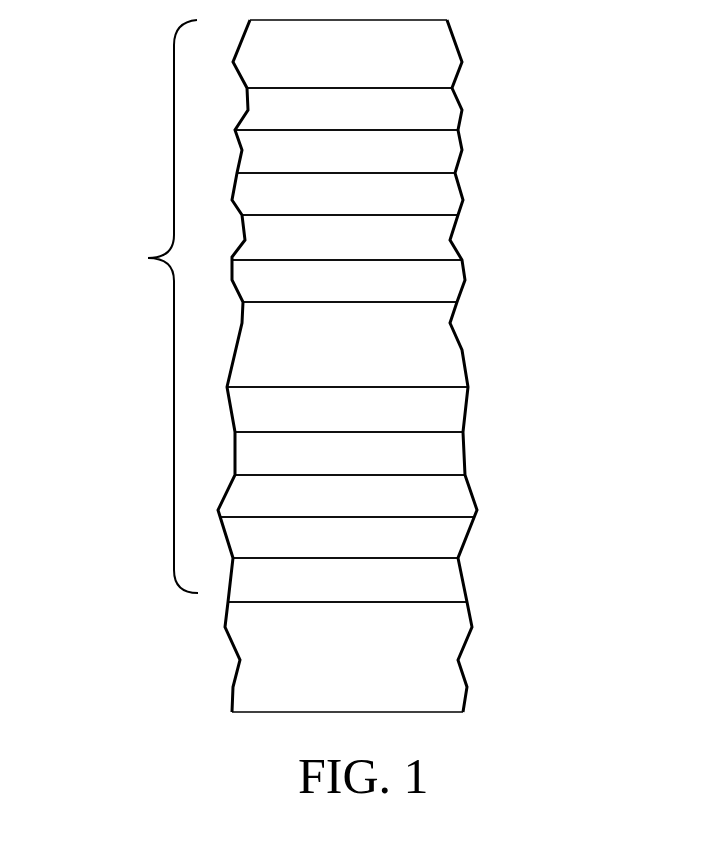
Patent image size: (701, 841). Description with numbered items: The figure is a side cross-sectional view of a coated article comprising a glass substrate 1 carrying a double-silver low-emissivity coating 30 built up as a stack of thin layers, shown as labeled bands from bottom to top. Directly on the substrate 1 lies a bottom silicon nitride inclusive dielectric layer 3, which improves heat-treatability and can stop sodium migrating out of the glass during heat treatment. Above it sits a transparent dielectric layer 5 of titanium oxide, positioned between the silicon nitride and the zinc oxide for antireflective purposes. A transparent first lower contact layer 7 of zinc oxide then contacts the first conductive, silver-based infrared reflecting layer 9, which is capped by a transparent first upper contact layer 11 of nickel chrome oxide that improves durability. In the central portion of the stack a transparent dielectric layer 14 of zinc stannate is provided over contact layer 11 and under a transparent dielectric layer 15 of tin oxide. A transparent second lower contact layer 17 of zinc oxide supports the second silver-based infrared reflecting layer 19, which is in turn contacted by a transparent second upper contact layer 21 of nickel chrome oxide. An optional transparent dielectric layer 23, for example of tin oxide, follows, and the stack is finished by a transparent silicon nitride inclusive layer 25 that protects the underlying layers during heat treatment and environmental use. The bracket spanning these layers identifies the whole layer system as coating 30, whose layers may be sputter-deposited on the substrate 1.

The substrate 1 is at (445, 657).
The bottom silicon nitride inclusive dielectric layer 3 is at (445, 582).
The transparent dielectric layer of titanium oxide 5 is at (445, 538).
The first lower contact layer 7 is at (445, 499).
The first infrared reflecting layer 9 is at (445, 458).
The first upper contact layer 11 is at (445, 415).
The zinc stannate dielectric layer 14 is at (445, 343).
The tin oxide dielectric layer 15 is at (445, 282).
The second lower contact layer 17 is at (445, 240).
The second infrared reflecting layer 19 is at (445, 198).
The second upper contact layer 21 is at (445, 153).
The transparent dielectric layer 23 is at (445, 112).
The transparent silicon nitride inclusive layer 25 is at (445, 63).
The coating 30 is at (138, 261).